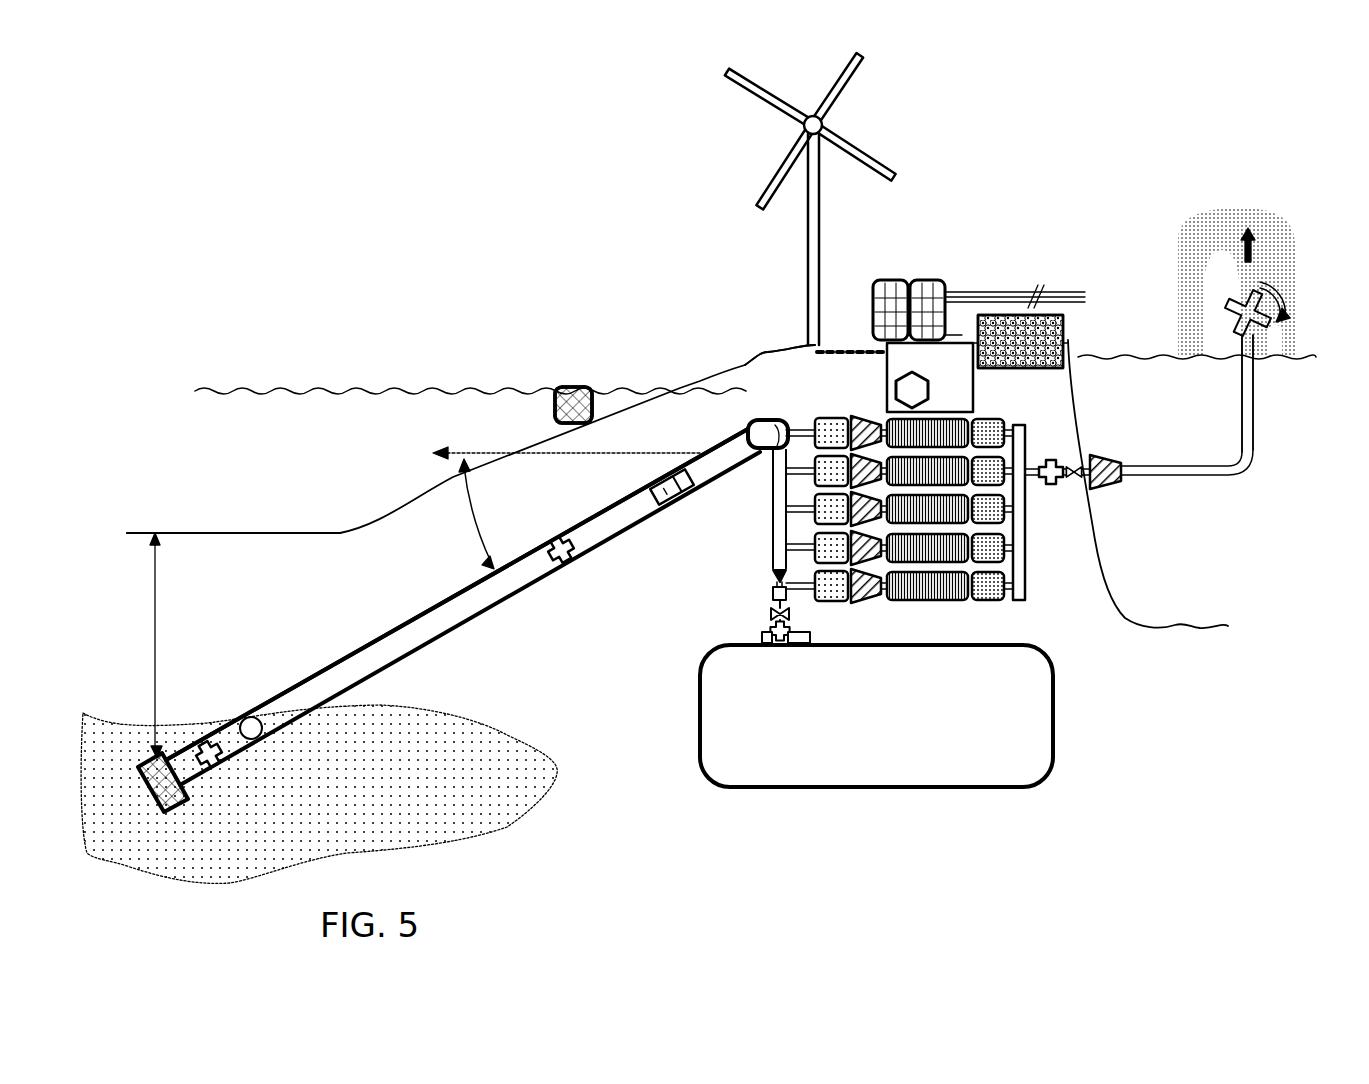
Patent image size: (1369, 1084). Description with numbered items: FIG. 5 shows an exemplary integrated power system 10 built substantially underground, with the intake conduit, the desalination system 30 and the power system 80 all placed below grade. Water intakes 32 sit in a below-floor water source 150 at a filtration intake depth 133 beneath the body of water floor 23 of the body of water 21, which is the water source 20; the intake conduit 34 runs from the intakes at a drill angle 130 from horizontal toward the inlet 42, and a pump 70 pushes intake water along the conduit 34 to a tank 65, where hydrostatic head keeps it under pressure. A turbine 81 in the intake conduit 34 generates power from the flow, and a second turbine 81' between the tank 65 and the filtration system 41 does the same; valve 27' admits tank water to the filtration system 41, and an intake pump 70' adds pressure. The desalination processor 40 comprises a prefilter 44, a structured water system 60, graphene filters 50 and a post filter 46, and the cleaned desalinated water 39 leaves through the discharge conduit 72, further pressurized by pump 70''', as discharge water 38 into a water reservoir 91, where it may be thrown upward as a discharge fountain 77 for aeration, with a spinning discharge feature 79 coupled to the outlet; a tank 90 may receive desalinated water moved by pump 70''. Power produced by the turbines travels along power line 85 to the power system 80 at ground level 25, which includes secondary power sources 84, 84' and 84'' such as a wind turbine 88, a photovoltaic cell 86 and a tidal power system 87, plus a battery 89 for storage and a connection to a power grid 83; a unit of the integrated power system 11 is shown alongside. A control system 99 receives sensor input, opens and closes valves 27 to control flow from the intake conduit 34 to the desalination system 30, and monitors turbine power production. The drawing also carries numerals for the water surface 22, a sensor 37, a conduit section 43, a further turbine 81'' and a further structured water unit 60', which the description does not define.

The integrated power system 10 is at (457, 193).
The power system 80 is at (1058, 185).
The secondary power source 84 is at (842, 131).
The wind turbine 88 is at (820, 112).
The secondary power source 84' is at (882, 273).
The integrated power system 11 is at (927, 280).
The photovoltaic cell 86 is at (953, 300).
The power grid 83 is at (1063, 314).
The battery 89 is at (1060, 316).
The ground level 25 is at (835, 347).
The control system 99 is at (896, 378).
The power line 85 is at (838, 352).
The tidal power system 87 is at (573, 387).
The secondary power source 84'' is at (596, 378).
The water surface 22 is at (294, 389).
The body of water 21 is at (425, 407).
The body of water floor 23 is at (282, 533).
The water source 20 is at (396, 460).
The drill angle 130 is at (470, 535).
The intake depth 133 is at (158, 652).
The valve 27 is at (765, 411).
The valve 27' is at (729, 562).
The sensor on conveyor 37 is at (665, 480).
The intake conduit 34 is at (338, 675).
The inlet 42 is at (410, 640).
The water intake 32 is at (180, 813).
The pump 70 is at (207, 728).
The intake pump 70' is at (562, 523).
The pump 70'' is at (770, 668).
The pump 70''' is at (1033, 441).
The turbine 81 is at (254, 705).
The turbine 81' is at (736, 595).
The check valve 81'' is at (1066, 439).
The filtration system 41 is at (785, 512).
The distribution pipe section 43 is at (773, 508).
The prefilter 44 is at (832, 603).
The structured water system 60 is at (865, 629).
The outlet nozzle 60' is at (1128, 464).
The graphene filter 50 is at (923, 603).
The post filter 46 is at (983, 603).
The desalination processor 40 is at (1025, 597).
The desalination system 30 is at (1040, 552).
The tank 65 is at (730, 745).
The desalinated water 39 is at (1225, 477).
The discharge conduit 72 is at (1241, 385).
The discharge feature 79 is at (1262, 337).
The discharge water 38 is at (1238, 211).
The discharge fountain 77 is at (1190, 239).
The water reservoir 91 is at (1097, 377).
The tank 90 is at (1118, 381).
The below-floor water source 150 is at (457, 747).